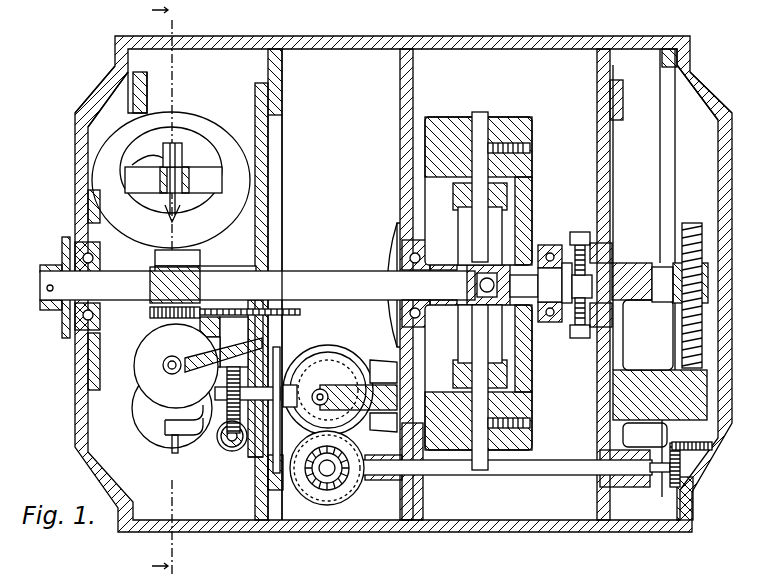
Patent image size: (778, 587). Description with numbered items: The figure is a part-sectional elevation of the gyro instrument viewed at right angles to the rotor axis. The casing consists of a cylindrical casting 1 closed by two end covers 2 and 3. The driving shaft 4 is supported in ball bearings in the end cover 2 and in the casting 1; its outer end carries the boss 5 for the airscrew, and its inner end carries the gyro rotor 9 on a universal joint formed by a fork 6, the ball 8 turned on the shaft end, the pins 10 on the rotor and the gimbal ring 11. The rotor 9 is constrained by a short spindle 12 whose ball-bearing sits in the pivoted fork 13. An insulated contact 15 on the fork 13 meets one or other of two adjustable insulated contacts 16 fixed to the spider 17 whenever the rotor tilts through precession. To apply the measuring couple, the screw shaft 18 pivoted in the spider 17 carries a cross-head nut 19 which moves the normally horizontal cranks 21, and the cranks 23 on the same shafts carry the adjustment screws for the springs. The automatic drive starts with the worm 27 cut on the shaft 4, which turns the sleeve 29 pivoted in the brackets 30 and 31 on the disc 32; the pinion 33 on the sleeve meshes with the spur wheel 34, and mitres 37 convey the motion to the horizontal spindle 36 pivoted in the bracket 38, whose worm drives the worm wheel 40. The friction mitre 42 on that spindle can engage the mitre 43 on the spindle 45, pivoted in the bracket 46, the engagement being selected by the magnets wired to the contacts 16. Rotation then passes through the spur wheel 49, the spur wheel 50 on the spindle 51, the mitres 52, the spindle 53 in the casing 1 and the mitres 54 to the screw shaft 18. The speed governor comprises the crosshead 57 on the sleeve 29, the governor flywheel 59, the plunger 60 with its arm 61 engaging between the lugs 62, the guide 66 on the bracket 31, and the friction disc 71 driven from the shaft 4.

The cylindrical casting 1 is at (465, 40).
The end cover 2 is at (82, 118).
The end cover 3 is at (725, 115).
The driving shaft 4 is at (348, 271).
The boss 5 is at (52, 266).
The fork 6 is at (434, 262).
The ball 8 is at (478, 285).
The gyro rotor 9 is at (530, 130).
The pins 10 is at (479, 125).
The gimbal ring 11 is at (453, 198).
The spindle 12 is at (540, 262).
The fork 13 is at (548, 340).
The insulated contact 15 is at (586, 285).
The adjustable insulated contacts 16 is at (580, 230).
The spider 17 is at (630, 270).
The screw shaft 18 is at (692, 222).
The cross-head nut 19 is at (708, 287).
The cranks 21 is at (658, 272).
The cranks 23 is at (607, 268).
The worm 27 is at (150, 303).
The sleeve 29 is at (186, 175).
The bracket 30 is at (228, 268).
The bracket 31 is at (160, 330).
The disc 32 is at (270, 172).
The pinion 33 is at (150, 314).
The spur wheel 34 is at (282, 312).
The horizontal spindle 36 is at (234, 451).
The mitres 37 is at (225, 446).
The bracket 38 is at (252, 462).
The worm wheel 40 is at (222, 440).
The friction mitre 42 is at (283, 360).
The mitre 43 is at (331, 347).
The spindle 45 is at (318, 400).
The bracket 46 is at (332, 386).
The spur wheel 49 is at (350, 372).
The spur wheel 50 is at (312, 492).
The spindle 51 is at (326, 478).
The mitres 52 is at (345, 488).
The spindle 53 is at (384, 478).
The mitres 54 is at (700, 472).
The crosshead 57 is at (210, 175).
The governor flywheel 59 is at (180, 122).
The plunger 60 is at (155, 162).
The arm 61 is at (172, 150).
The lugs 62 is at (172, 218).
The guide 66 is at (165, 428).
The friction disc 71 is at (142, 362).